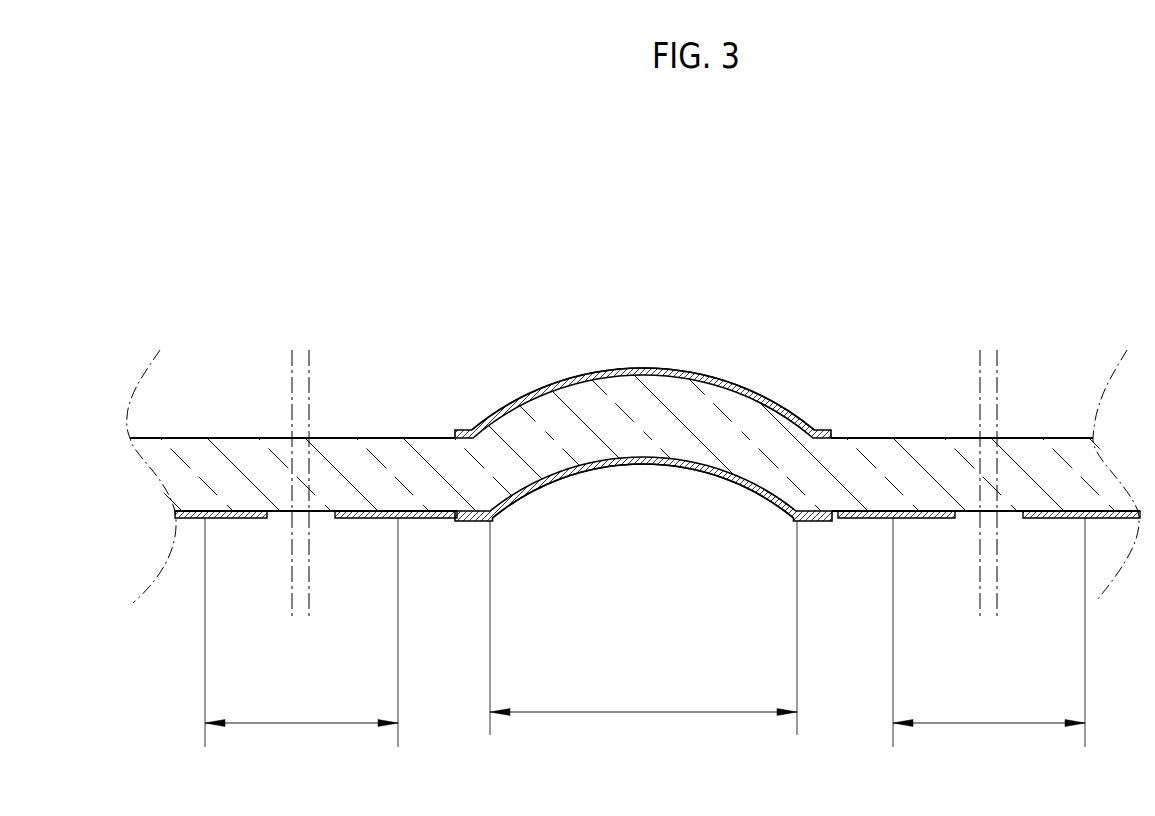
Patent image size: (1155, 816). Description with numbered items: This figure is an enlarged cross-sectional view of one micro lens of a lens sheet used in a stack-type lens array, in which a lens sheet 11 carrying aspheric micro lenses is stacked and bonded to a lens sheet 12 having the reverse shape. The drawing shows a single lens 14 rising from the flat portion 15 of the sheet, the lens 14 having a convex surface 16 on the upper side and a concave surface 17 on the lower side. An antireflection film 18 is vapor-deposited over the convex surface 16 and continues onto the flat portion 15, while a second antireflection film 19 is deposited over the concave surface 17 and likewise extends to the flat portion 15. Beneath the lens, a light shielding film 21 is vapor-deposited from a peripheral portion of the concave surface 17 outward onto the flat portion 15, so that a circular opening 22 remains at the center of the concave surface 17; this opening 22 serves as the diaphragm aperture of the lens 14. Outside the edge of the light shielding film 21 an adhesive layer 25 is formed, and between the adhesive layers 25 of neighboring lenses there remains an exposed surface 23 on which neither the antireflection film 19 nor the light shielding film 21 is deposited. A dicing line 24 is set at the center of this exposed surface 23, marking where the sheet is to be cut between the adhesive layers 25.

The lens sheet 11 is at (890, 352).
The lens sheet 12 is at (592, 468).
The micro lens 14 is at (643, 433).
The flat portion 15 is at (337, 438).
The convex surface 16 is at (643, 378).
The concave surface 17 is at (643, 502).
The antireflection film 18 is at (558, 381).
The antireflection film 19 is at (563, 478).
The light shielding film 21 is at (657, 549).
The opening 22 is at (643, 628).
The exposed surface 23 is at (645, 632).
The dicing line 24 is at (298, 572).
The adhesive layer 25 is at (363, 519).